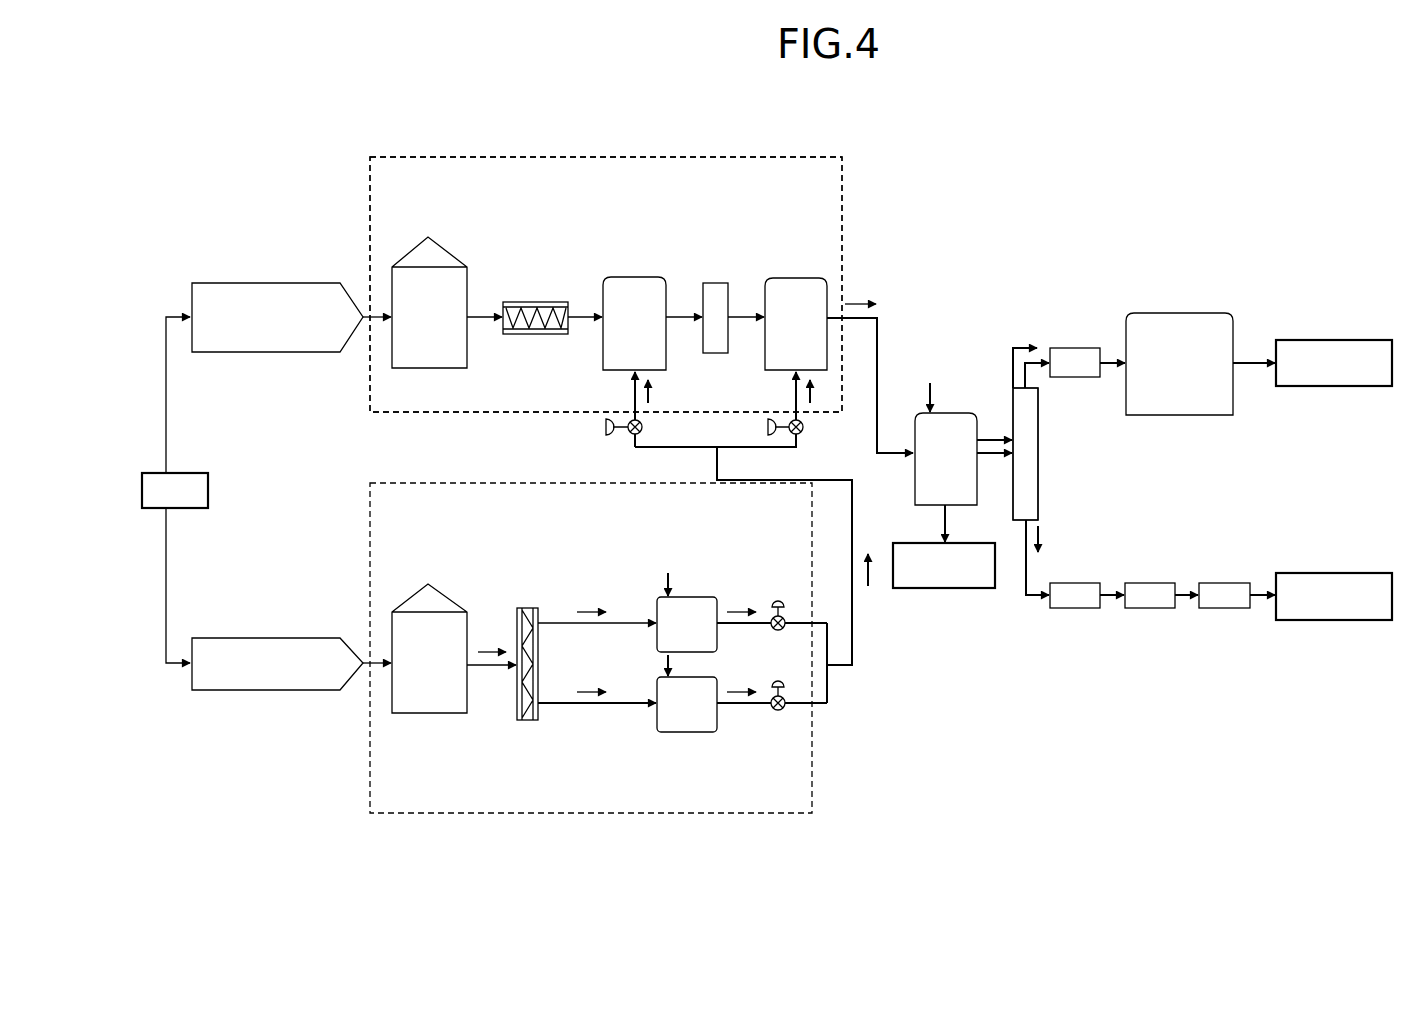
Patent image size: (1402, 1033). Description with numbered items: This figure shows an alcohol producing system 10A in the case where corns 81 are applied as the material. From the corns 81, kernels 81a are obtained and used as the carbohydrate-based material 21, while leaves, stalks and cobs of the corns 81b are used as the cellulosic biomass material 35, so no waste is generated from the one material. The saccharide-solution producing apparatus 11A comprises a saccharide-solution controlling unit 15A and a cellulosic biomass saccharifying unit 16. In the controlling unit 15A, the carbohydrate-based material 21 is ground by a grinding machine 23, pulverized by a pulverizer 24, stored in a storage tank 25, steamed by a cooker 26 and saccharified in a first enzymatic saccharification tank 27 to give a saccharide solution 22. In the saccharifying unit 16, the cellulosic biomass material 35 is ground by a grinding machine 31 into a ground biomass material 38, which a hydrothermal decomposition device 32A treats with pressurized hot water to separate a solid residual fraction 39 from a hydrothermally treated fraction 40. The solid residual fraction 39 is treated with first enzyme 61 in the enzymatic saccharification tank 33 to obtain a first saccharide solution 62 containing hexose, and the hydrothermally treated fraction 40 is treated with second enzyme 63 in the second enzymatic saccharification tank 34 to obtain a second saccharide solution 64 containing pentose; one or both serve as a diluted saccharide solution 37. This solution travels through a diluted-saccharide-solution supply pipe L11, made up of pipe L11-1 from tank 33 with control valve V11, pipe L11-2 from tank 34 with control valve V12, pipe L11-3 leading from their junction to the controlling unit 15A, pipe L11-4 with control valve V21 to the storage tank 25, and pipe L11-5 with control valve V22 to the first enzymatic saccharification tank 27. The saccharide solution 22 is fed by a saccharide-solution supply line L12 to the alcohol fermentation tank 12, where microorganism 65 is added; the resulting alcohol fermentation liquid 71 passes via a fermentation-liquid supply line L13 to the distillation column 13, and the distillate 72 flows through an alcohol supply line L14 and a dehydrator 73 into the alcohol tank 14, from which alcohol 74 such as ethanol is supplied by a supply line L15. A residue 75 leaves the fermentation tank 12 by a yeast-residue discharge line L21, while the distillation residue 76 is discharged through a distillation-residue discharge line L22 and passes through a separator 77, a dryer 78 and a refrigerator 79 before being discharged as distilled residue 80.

The alcohol producing system 10A is at (1160, 108).
The saccharide-solution producing apparatus 11A is at (330, 142).
The alcohol fermentation tank 12 is at (950, 412).
The distillation column 13 is at (1040, 480).
The alcohol tank 14 is at (1180, 313).
The saccharide-solution controlling unit 15A is at (605, 157).
The cellulosic biomass saccharifying unit 16 is at (605, 813).
The carbohydrate-based material 21 is at (275, 283).
The saccharide solution 22 is at (852, 305).
The grinding machine 23 is at (441, 242).
The pulverizer 24 is at (538, 302).
The storage tank 25 is at (640, 277).
The cooker 26 is at (712, 283).
The first enzymatic saccharification tank 27 is at (790, 278).
The grinding machine 31 is at (438, 588).
The hydrothermal decomposition device 32A is at (531, 608).
The enzymatic saccharification tank (C6) 33 is at (688, 597).
The second enzymatic saccharification tank (C5) 34 is at (688, 732).
The cellulosic biomass material 35 is at (272, 638).
The diluted saccharide solution 37 is at (872, 582).
The ground biomass material 38 is at (492, 651).
The solid residual fraction 39 is at (590, 611).
The hydrothermally treated fraction 40 is at (590, 691).
The first enzyme (cellulase) 61 is at (664, 580).
The first saccharide solution 62 is at (740, 611).
The second enzyme 63 is at (664, 662).
The second saccharide solution 64 is at (740, 691).
The microorganism 65 is at (928, 396).
The alcohol fermentation liquid 71 is at (984, 438).
The distillate 72 is at (1012, 345).
The dehydrator 73 is at (1076, 348).
The alcohol 74 is at (1336, 340).
The residue 75 is at (962, 550).
The distillation residue 76 is at (1046, 538).
The separator 77 is at (1075, 608).
The dryer 78 is at (1148, 608).
The refrigerator 79 is at (1220, 608).
The distilled residue 80 is at (1336, 573).
The corns 81 is at (209, 494).
The kernels 81a is at (167, 415).
The leaves, stalks and cobs of the corns 81b is at (167, 562).
The control valve V11 is at (780, 598).
The control valve V12 is at (780, 680).
The control valve V21 is at (604, 427).
The control valve V22 is at (766, 427).
The diluted-saccharide-solution supply pipe L11 is at (872, 644).
The diluted-saccharide-solution supply pipe L11-1 is at (826, 620).
The diluted-saccharide-solution supply pipe L11-2 is at (827, 706).
The diluted-saccharide-solution supply pipe L11-3 is at (853, 530).
The diluted-saccharide-solution supply pipe L11-4 is at (632, 447).
The diluted-saccharide-solution supply pipe L11-5 is at (800, 436).
The saccharide-solution supply line L12 is at (878, 321).
The fermentation-liquid supply line L13 is at (986, 462).
The alcohol supply line L14 is at (1110, 366).
The supply line L15 is at (1243, 366).
The yeast-residue discharge line L21 is at (944, 518).
The distillation-residue discharge line L22 is at (1035, 573).